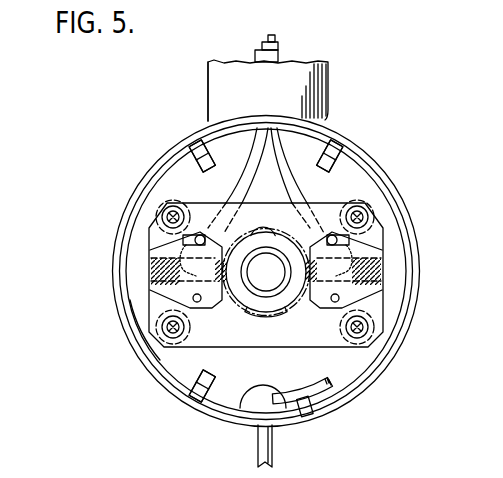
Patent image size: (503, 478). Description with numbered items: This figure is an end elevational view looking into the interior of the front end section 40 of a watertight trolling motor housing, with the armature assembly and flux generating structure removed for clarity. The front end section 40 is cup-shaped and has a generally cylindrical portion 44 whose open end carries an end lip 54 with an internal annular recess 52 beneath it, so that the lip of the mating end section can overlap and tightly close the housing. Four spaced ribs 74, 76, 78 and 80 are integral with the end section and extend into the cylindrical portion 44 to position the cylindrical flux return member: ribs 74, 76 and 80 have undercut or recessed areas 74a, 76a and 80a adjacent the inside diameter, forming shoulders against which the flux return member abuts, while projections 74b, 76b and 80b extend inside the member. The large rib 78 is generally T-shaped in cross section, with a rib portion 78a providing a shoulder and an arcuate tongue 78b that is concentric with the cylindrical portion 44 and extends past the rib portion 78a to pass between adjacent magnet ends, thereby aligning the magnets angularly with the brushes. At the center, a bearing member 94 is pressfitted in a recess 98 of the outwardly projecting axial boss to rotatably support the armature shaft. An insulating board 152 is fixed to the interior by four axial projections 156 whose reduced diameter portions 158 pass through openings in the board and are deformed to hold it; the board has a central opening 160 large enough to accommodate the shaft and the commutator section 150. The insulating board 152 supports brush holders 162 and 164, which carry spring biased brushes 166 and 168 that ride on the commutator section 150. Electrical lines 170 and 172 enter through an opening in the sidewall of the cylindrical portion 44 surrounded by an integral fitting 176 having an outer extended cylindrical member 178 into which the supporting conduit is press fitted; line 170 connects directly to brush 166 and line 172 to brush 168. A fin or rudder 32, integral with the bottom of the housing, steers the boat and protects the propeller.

The fin or rudder 32 is at (260, 447).
The front end section 40 is at (143, 177).
The cylindrical portion 44 is at (388, 372).
The internal annular recess 52 is at (157, 362).
The end lip 54 is at (121, 305).
The rib 74 is at (200, 150).
The undercut or recessed area 74a is at (195, 156).
The projection 74b is at (198, 168).
The rib 76 is at (348, 158).
The undercut or recessed area 76a is at (334, 150).
The projection 76b is at (345, 167).
The large projection or rib 78 is at (323, 410).
The rib portion 78a is at (320, 404).
The tongue or elongated axial projection 78b is at (263, 407).
The rib 80 is at (193, 392).
The undercut or recessed area 80a is at (198, 400).
The projection 80b is at (268, 375).
The bearing member 94 is at (262, 288).
The internal recess 98 is at (277, 293).
The commutator means or section 150 is at (272, 316).
The insulating board 152 is at (155, 229).
The axial projections 156 is at (160, 203).
The reduced diameter portions 158 is at (180, 216).
The central opening 160 is at (264, 233).
The brush holder 162 is at (150, 274).
The brush holder 164 is at (381, 258).
The brush 166 is at (222, 282).
The brush 168 is at (310, 283).
The electrical line 170 is at (257, 58).
The electrical line 172 is at (280, 58).
The fitting 176 is at (292, 89).
The outer extended cylindrical member 178 is at (208, 72).